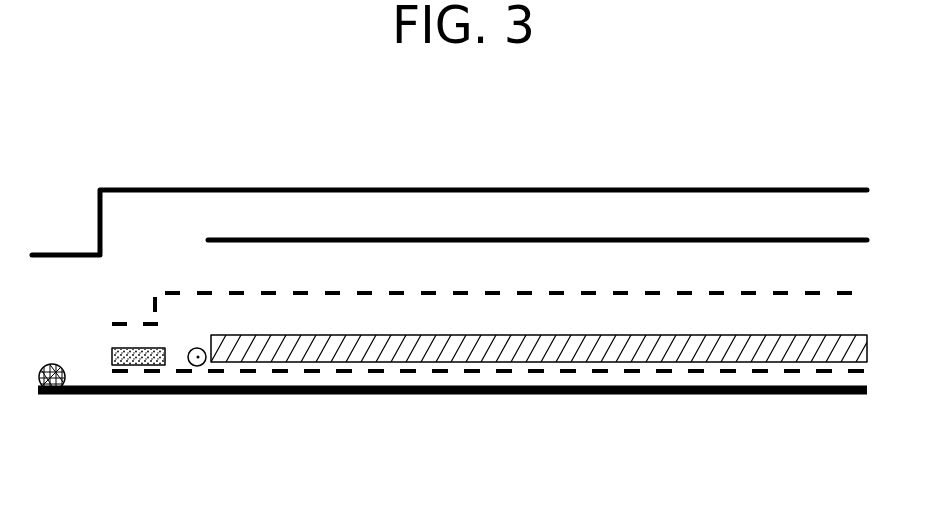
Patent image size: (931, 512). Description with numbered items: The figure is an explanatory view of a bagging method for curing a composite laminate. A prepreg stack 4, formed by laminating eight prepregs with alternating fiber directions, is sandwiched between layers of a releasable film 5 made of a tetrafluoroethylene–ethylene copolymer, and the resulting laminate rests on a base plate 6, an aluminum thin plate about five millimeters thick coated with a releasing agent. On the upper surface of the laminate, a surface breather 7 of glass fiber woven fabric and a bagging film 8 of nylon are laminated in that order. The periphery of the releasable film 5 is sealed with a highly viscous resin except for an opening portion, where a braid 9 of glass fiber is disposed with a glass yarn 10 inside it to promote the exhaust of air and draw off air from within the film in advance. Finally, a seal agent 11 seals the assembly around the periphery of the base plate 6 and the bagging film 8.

The prepreg stack 4 is at (422, 350).
The releasable film 5 is at (647, 293).
The base plate 6 is at (800, 395).
The surface breather 7 is at (663, 238).
The bagging film 8 is at (462, 188).
The braid 9 is at (133, 365).
The glass yarn 10 is at (197, 366).
The seal agent 11 is at (58, 387).